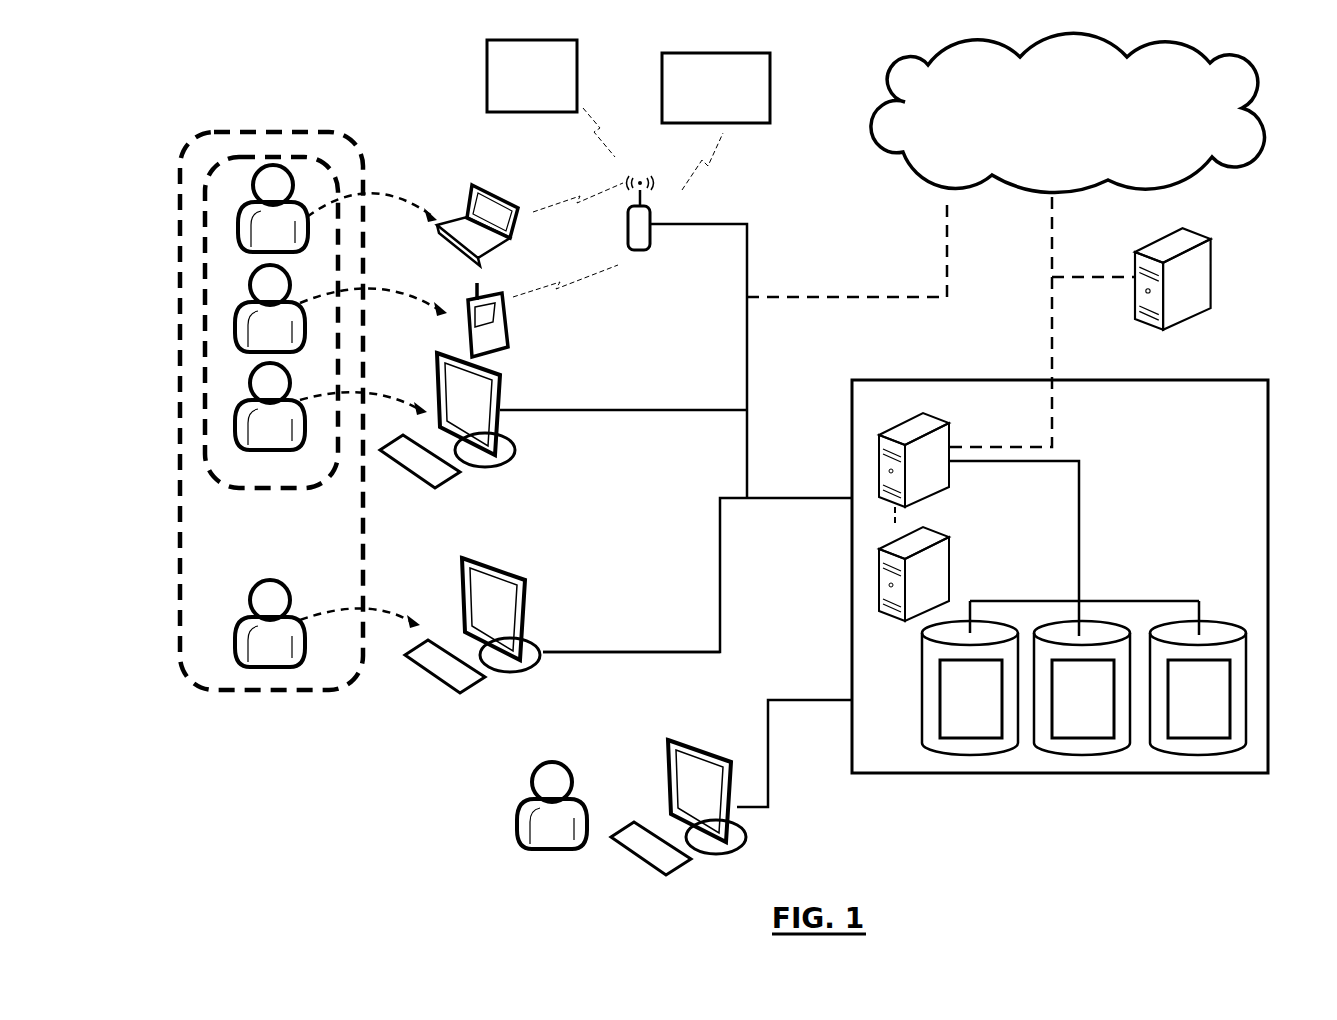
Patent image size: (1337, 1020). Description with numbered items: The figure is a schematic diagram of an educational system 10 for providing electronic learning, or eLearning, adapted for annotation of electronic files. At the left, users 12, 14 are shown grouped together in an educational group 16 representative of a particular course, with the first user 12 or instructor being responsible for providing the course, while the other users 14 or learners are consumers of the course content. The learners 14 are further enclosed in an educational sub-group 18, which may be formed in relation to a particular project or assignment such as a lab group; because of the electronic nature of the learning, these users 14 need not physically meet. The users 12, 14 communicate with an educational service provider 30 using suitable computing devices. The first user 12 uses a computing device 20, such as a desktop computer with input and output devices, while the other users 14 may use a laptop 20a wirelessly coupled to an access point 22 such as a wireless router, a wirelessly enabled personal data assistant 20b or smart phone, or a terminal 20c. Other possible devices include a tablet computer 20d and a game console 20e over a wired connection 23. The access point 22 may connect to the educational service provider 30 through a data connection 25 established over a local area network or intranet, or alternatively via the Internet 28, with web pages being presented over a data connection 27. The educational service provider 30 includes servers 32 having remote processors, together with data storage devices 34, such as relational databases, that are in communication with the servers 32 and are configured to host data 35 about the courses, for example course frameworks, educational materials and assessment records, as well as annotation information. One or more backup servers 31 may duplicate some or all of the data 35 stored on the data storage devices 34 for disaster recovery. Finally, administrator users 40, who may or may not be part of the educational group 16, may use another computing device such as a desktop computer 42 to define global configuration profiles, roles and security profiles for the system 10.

The educational system 10 is at (215, 95).
The first user 12 is at (240, 622).
The users 14 is at (245, 210).
The educational group 16 is at (182, 500).
The educational sub-group 18 is at (330, 158).
The computing device 20 is at (535, 622).
The laptop 20a is at (498, 190).
The personal data assistant 20b is at (500, 298).
The terminal 20c is at (515, 455).
The tablet computer 20d is at (487, 70).
The game console 20e is at (727, 52).
The access point 22 is at (648, 248).
The wired connection 23 is at (630, 412).
The data connection 25 is at (812, 500).
The data connection 27 is at (865, 297).
The Internet 28 is at (885, 88).
The educational service provider 30 is at (870, 380).
The backup servers 31 is at (1205, 240).
The servers 32 is at (940, 428).
The data storage devices 34 is at (1090, 630).
The data 35 is at (1232, 692).
The users 40 is at (523, 802).
The desktop computer 42 is at (745, 835).